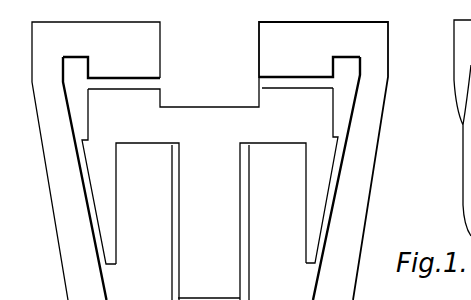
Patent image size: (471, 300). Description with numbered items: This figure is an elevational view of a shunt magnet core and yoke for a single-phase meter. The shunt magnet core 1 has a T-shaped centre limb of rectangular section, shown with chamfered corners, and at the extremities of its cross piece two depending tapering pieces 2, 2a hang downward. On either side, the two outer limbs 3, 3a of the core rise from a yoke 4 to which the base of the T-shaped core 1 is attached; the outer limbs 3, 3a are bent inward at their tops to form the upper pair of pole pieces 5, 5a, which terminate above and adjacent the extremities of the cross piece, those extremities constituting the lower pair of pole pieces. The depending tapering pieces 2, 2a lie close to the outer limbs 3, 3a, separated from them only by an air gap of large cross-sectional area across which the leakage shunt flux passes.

The shunt magnet core 1 is at (242, 221).
The depending tapering piece 2 is at (105, 225).
The depending tapering piece 2a is at (313, 218).
The outer limb 3 is at (58, 188).
The outer limb 3a is at (357, 175).
The yoke 4 is at (132, 299).
The pole piece 5 is at (147, 73).
The pole piece 5a is at (276, 76).